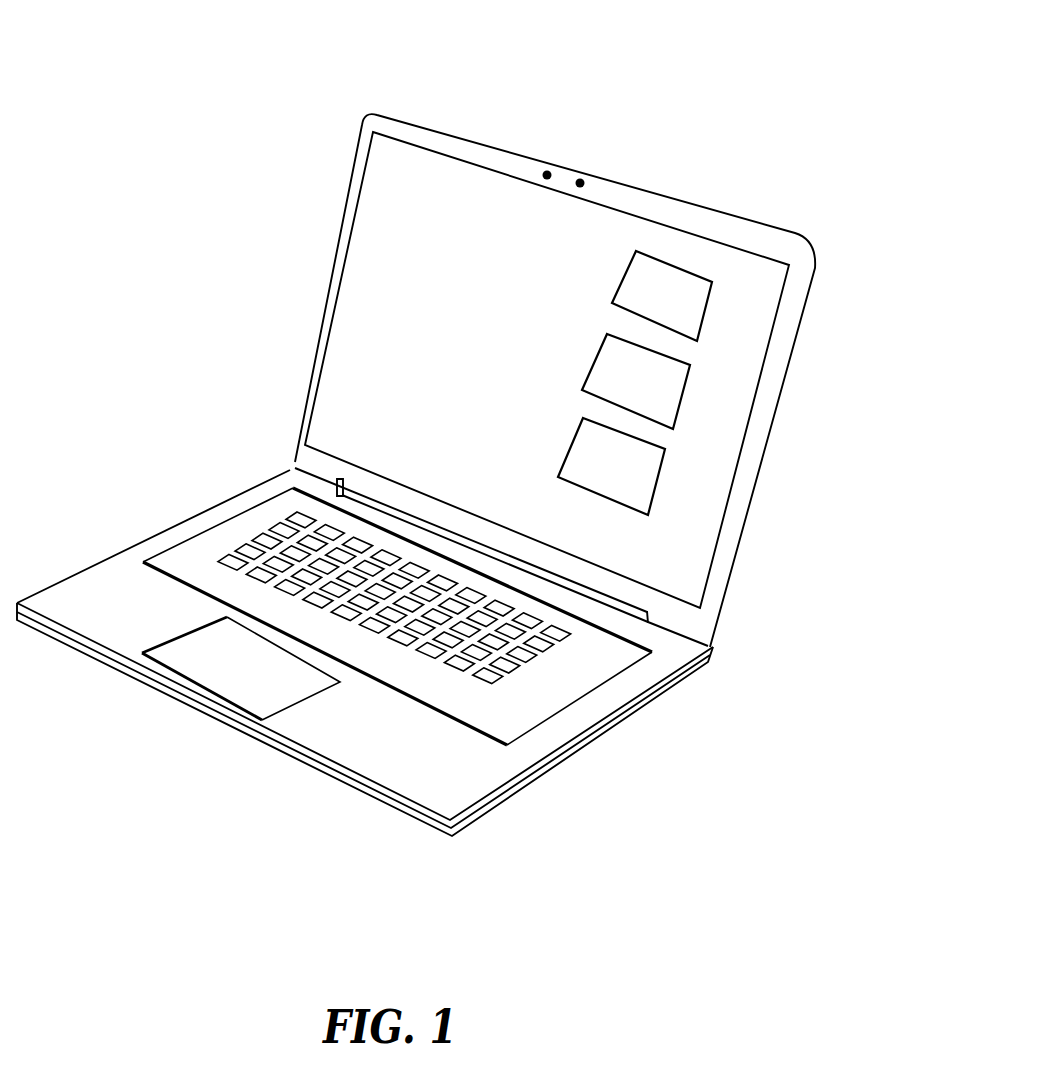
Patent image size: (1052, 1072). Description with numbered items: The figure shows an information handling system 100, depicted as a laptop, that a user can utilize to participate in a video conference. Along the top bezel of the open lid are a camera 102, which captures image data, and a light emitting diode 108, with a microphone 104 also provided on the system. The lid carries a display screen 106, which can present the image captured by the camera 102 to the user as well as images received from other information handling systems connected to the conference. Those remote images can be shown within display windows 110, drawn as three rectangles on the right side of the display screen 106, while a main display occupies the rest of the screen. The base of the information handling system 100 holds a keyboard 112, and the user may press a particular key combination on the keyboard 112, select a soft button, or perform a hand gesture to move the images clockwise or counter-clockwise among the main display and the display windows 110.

The information handling system 100 is at (160, 60).
The camera 102 is at (552, 169).
The microphone 104 is at (460, 825).
The display screen 106 is at (393, 297).
The light emitting diode (LED) 108 is at (585, 182).
The display windows 110 is at (707, 307).
The keyboard 112 is at (262, 522).